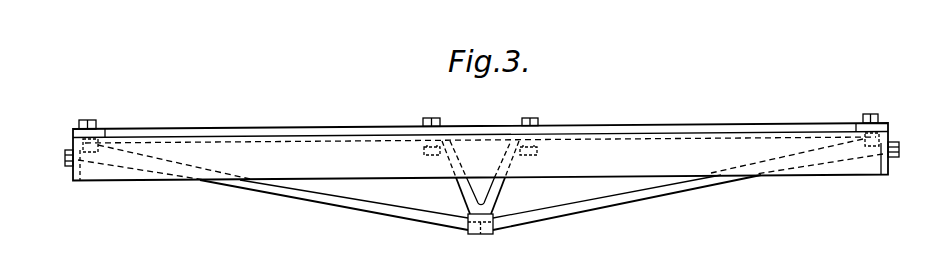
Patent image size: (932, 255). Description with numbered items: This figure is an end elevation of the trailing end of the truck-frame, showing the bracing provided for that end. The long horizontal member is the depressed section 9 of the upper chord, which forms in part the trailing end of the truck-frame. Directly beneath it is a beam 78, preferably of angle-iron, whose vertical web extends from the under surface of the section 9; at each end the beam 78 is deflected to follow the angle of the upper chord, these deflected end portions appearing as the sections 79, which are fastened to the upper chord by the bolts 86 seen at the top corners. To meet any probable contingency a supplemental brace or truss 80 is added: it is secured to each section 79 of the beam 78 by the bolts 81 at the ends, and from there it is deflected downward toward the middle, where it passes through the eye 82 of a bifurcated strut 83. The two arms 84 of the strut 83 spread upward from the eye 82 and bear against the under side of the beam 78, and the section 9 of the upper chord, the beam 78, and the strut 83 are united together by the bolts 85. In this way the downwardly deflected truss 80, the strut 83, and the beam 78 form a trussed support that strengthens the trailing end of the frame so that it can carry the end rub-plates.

The depressed section of the upper chord 9 is at (242, 130).
The beam 78 is at (480, 159).
The deflected section of the beam 79 is at (72, 171).
The truss 80 is at (319, 201).
The bolts 81 is at (65, 157).
The eye of the strut 82 is at (481, 235).
The bifurcated strut 83 is at (480, 173).
The arms of the strut 84 is at (457, 186).
The bolts 85 is at (440, 121).
The bolts 86 is at (97, 124).